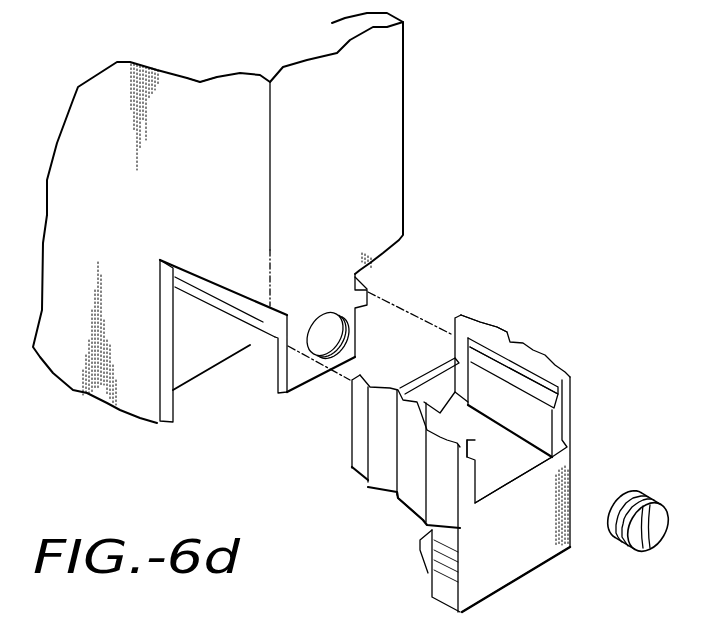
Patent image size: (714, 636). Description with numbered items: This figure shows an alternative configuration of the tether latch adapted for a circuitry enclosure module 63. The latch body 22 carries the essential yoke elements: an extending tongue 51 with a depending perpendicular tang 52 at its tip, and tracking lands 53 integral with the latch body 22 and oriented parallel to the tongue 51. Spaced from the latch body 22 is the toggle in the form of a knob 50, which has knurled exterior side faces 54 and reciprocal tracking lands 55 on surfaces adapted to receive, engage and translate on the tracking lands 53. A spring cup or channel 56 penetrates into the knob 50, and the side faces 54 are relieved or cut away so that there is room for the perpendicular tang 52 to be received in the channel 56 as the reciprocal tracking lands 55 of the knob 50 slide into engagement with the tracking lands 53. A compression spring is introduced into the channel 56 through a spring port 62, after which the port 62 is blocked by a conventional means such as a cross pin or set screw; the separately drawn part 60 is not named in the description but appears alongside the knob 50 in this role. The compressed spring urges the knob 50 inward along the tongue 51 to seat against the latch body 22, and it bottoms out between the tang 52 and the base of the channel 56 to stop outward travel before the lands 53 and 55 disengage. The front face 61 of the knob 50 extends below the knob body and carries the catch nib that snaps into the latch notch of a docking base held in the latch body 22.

The latch body 22 is at (248, 212).
The knob 50 is at (370, 488).
The extending tongue 51 is at (268, 348).
The tang 52 is at (352, 368).
The tracking lands 53 is at (380, 292).
The knurled exterior side faces 54 is at (503, 331).
The reciprocal tracking lands 55 is at (556, 406).
The spring channel 56 is at (515, 457).
The screw 60 is at (650, 498).
The front face 61 is at (520, 558).
The spring port 62 is at (328, 330).
The circuitry enclosure module 63 is at (202, 80).